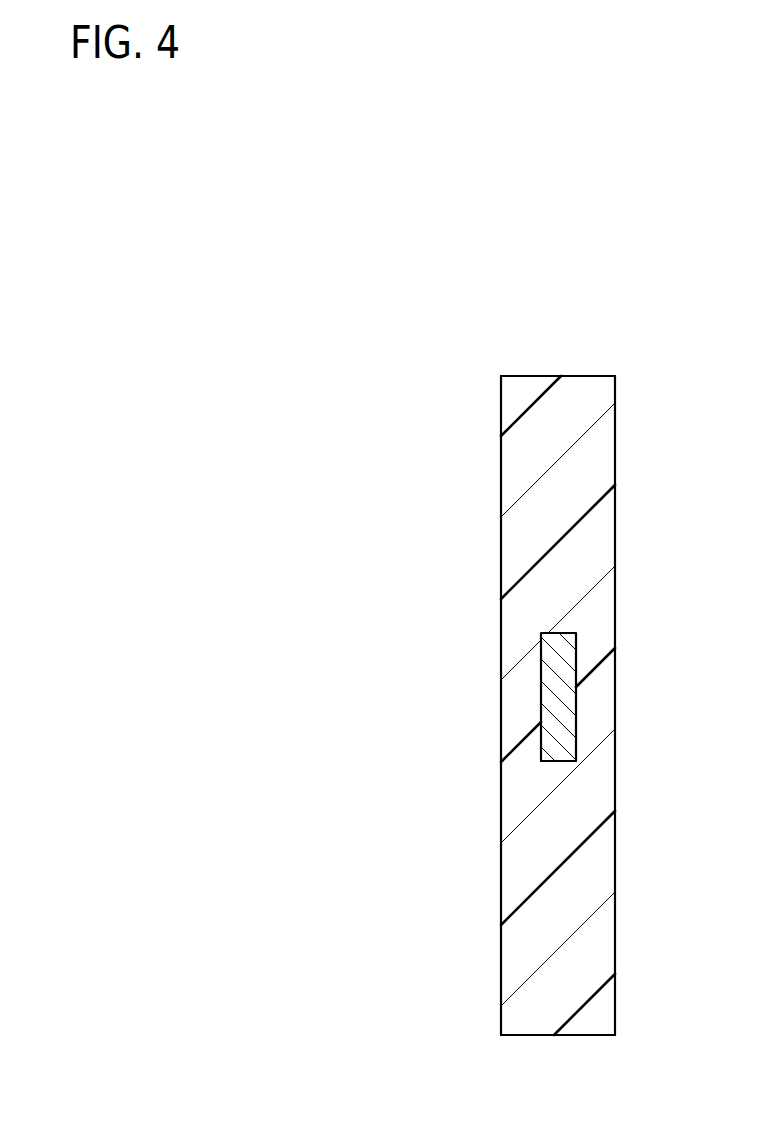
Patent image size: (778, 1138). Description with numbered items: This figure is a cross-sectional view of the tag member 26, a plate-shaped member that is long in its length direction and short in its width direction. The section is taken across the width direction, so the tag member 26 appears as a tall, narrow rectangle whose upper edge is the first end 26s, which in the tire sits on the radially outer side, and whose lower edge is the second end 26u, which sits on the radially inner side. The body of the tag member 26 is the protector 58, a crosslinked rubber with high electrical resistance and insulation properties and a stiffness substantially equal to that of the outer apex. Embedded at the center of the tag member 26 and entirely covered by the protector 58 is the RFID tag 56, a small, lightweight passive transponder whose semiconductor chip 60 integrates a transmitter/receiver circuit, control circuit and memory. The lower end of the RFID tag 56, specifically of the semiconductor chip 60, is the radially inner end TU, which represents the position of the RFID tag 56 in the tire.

The tag member 26 is at (650, 338).
The first end 26s is at (543, 376).
The second end 26u is at (570, 1035).
The protector 58 is at (597, 547).
The RFID tag 56 is at (533, 657).
The semiconductor chip 60 is at (548, 697).
The radially inner end of the RFID tag TU is at (557, 762).